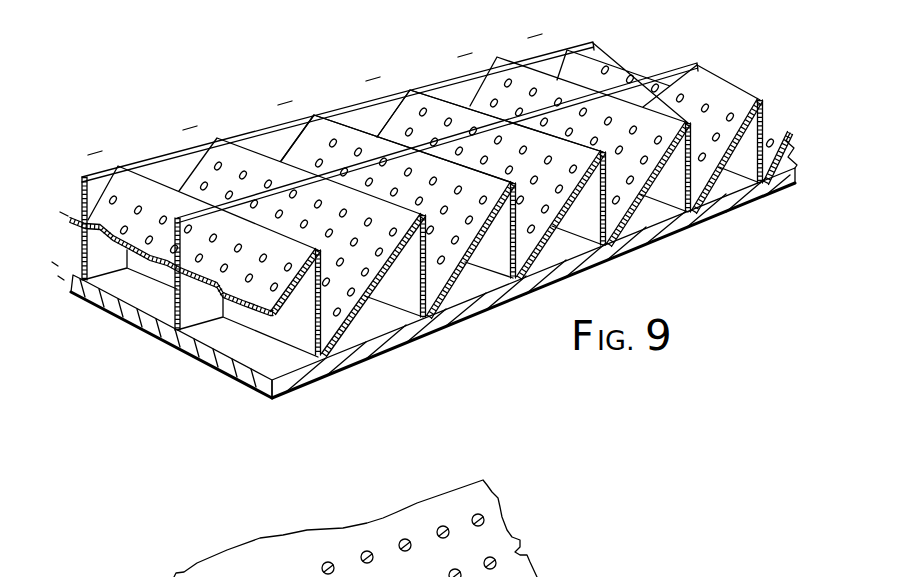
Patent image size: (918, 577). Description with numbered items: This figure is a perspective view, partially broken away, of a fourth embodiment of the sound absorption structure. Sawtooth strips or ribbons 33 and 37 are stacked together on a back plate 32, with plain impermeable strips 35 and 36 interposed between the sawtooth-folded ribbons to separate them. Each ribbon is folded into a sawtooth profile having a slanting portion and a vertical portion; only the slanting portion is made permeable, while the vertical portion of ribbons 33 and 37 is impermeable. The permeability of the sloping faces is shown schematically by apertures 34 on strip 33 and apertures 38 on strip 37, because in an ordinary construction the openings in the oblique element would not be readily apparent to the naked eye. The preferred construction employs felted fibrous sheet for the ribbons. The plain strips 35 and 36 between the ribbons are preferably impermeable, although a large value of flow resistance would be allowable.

The back plate 32 is at (724, 217).
The sawtooth strip 33 is at (760, 98).
The apertures 34 is at (733, 110).
The impermeable strip 35 is at (682, 66).
The impermeable strip 36 is at (503, 64).
The sawtooth strip 37 is at (432, 95).
The apertures 38 is at (333, 143).